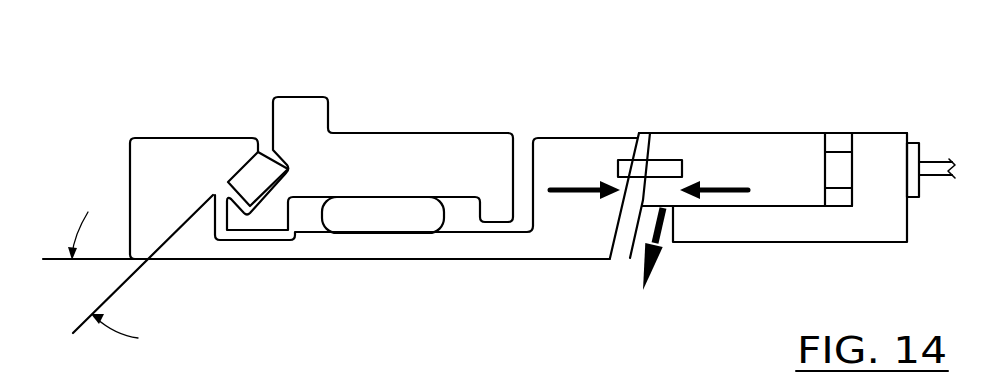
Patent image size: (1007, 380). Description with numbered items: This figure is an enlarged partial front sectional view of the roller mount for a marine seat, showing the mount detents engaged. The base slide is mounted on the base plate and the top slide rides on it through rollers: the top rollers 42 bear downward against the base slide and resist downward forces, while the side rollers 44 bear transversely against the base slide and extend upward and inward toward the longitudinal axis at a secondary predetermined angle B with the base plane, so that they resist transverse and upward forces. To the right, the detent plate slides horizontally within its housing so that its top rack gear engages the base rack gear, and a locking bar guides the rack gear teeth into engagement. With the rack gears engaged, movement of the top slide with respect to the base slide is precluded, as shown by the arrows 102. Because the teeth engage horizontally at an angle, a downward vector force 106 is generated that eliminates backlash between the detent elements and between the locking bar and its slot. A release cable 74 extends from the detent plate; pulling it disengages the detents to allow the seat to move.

The side rollers 44 is at (252, 177).
The top rollers 42 is at (377, 218).
The secondary predetermined angle B is at (140, 266).
The release cable 74 is at (940, 158).
The arrows 102 is at (570, 193).
The downward vector force 106 is at (658, 243).